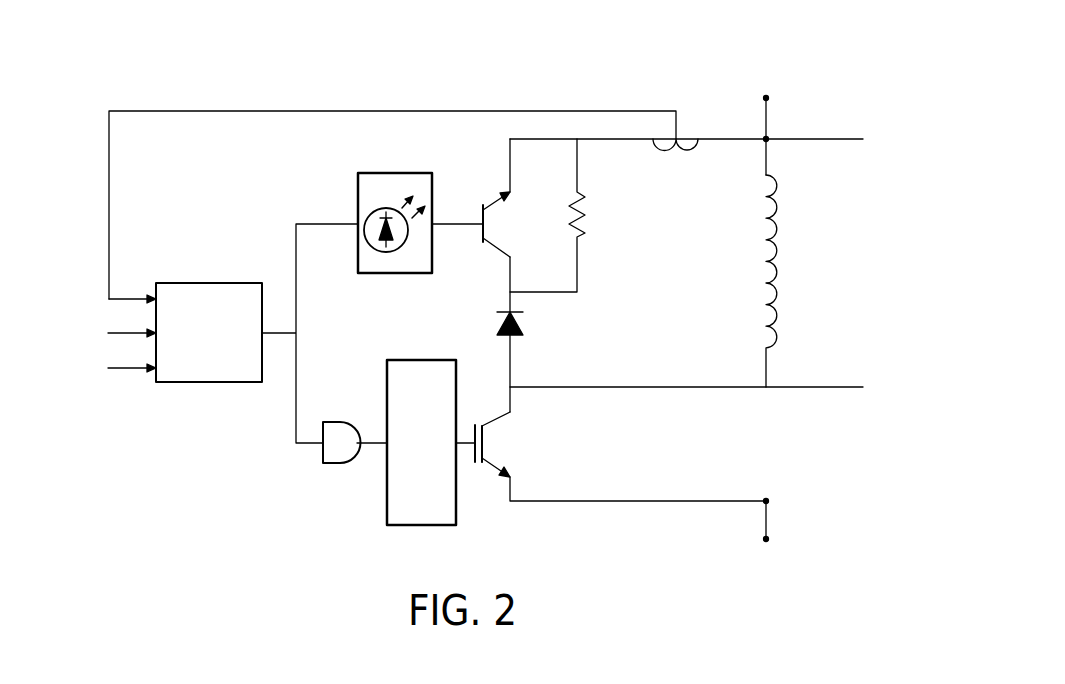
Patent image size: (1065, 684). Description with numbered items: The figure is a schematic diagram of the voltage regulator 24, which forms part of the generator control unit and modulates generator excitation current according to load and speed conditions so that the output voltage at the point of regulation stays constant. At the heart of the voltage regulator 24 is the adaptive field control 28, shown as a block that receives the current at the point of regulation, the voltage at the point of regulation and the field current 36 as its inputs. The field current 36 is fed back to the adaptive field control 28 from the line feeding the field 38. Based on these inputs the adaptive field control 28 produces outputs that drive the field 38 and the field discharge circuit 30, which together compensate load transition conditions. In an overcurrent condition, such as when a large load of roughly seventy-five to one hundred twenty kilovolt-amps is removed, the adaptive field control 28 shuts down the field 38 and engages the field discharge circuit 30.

The voltage regulator 24 is at (131, 70).
The adaptive field control 28 is at (200, 384).
The field discharge circuit 30 is at (481, 184).
The field current 36 is at (312, 111).
The field 38 is at (812, 257).